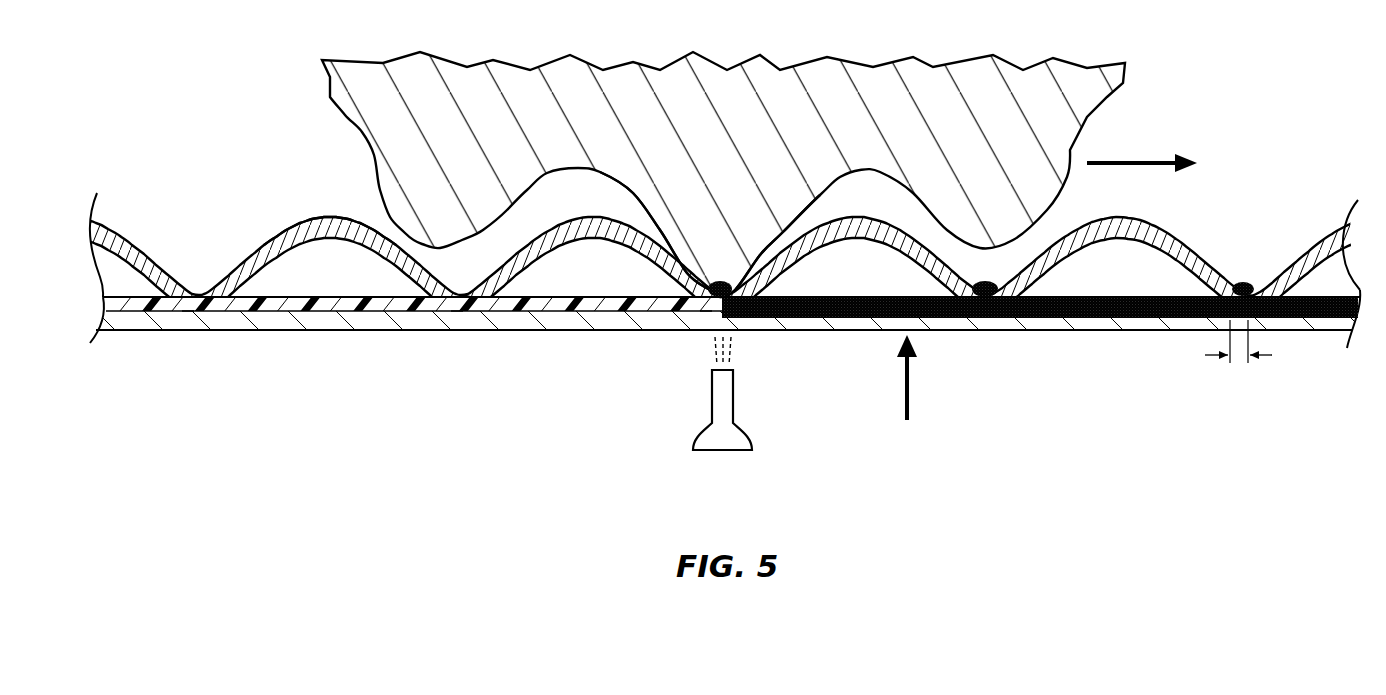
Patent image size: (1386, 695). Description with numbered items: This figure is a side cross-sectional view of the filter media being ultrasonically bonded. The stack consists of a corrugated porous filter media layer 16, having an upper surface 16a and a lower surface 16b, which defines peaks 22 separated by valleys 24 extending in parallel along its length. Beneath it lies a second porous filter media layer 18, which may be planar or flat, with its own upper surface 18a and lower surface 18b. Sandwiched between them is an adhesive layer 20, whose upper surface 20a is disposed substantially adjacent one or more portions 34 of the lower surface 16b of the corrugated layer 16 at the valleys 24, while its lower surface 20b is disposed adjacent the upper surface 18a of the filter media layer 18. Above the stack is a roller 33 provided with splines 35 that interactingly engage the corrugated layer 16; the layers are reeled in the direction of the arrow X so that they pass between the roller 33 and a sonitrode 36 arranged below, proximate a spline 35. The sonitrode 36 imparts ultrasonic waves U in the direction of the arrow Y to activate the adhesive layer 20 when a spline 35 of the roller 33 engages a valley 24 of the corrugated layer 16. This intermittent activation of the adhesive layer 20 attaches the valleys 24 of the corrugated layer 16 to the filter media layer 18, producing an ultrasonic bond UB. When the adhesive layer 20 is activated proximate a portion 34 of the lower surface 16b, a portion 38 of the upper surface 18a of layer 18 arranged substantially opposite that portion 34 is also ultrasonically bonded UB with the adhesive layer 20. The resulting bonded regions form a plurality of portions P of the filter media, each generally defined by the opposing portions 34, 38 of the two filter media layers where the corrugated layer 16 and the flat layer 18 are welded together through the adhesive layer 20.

The corrugated porous filter media layer 16 is at (704, 229).
The upper surface 16a is at (112, 227).
The lower surface 16b is at (99, 256).
The porous filter media layer 18 is at (701, 354).
The upper surface 18a is at (365, 297).
The lower surface 18b is at (285, 332).
The adhesive layer 20 is at (701, 356).
The upper surface 20a is at (103, 295).
The lower surface 20b is at (118, 314).
The peaks 22 is at (333, 220).
The valleys 24 is at (200, 293).
The roller 33 is at (1113, 73).
The portions of the lower surface 34 is at (193, 291).
The splines 35 is at (712, 290).
The sonitrode 36 is at (703, 433).
The portion of the upper surface 38 is at (188, 315).
The ultrasonic waves U is at (705, 361).
The ultrasonic bond UB is at (717, 285).
The reeling direction arrow X is at (1142, 154).
The ultrasonic wave direction arrow Y is at (913, 377).
The portions of the filter media P is at (1246, 344).